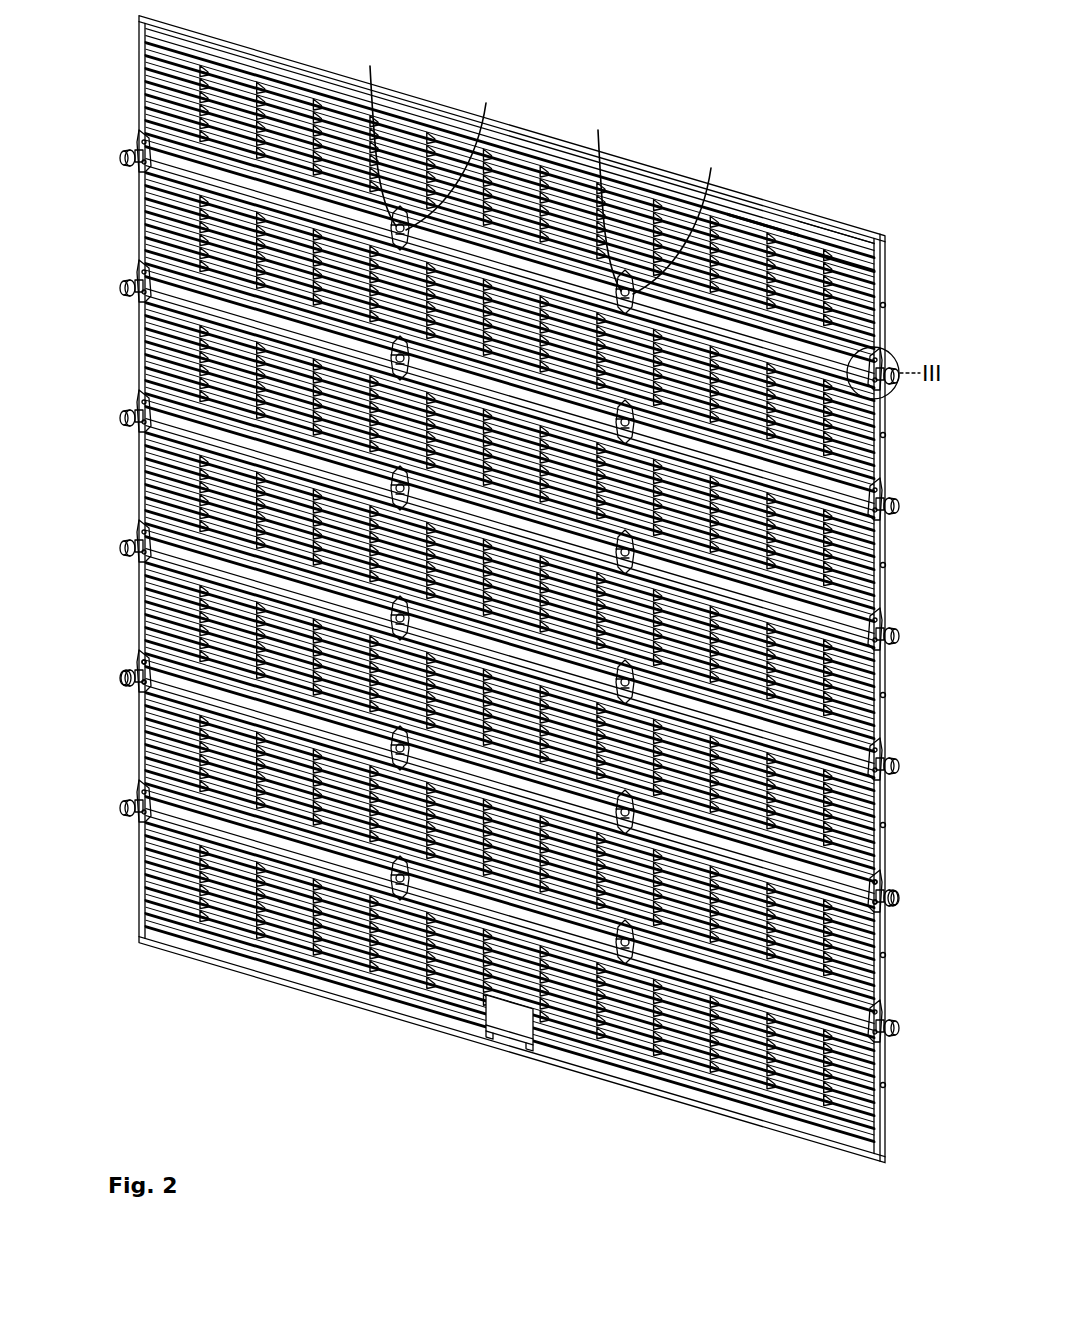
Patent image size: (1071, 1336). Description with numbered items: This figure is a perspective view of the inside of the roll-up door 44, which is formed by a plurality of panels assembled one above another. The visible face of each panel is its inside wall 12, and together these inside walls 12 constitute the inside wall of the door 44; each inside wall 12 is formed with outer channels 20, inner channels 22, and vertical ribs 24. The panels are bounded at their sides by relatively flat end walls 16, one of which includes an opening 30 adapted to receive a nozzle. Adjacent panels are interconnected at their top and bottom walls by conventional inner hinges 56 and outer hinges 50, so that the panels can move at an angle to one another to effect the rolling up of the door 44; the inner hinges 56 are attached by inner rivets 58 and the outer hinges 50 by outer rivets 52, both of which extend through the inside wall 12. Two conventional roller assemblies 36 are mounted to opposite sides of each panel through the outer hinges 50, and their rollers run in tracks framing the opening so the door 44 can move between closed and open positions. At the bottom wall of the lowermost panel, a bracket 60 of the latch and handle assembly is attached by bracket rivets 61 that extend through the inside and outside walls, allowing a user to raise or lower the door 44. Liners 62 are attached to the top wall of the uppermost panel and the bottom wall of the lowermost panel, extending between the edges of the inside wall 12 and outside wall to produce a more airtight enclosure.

The inside wall 12 is at (624, 1034).
The end wall 16 is at (886, 1140).
The outer channel 20 is at (932, 247).
The inner channel 22 is at (876, 267).
The vertical rib 24 is at (770, 231).
The opening 30 is at (878, 299).
The roller assembly 36 is at (118, 138).
The roll-up door 44 is at (813, 113).
The outer hinge 50 is at (113, 661).
The outer rivet 52 is at (130, 652).
The inner hinge 56 is at (400, 210).
The inner rivet 58 is at (542, 166).
The bracket 60 is at (500, 1020).
The bracket rivet 61 is at (478, 1031).
The liner 62 is at (840, 221).